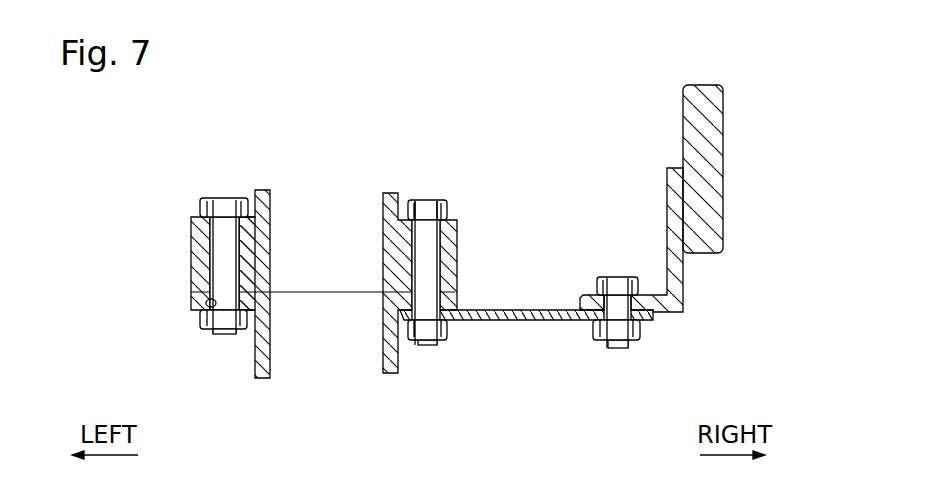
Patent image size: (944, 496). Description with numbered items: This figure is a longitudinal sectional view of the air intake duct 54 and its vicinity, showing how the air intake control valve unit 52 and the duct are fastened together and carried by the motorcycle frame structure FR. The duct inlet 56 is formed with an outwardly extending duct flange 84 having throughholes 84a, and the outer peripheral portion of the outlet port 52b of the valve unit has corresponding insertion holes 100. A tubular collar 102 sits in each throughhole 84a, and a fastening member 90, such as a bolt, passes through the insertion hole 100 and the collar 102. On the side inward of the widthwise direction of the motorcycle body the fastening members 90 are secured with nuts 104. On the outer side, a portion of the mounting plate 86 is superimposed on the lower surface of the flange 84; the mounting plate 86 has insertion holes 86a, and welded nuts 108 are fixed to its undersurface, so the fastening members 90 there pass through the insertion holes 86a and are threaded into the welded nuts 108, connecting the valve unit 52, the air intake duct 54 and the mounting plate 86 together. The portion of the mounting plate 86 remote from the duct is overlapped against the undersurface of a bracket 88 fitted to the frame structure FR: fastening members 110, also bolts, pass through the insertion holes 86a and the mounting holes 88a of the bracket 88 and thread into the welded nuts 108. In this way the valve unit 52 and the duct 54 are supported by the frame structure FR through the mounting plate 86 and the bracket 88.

The air intake control valve unit 52 is at (189, 247).
The outlet port 52b is at (382, 272).
The air intake duct 54 is at (243, 376).
The duct inlet 56 is at (271, 345).
The duct flange 84 is at (195, 297).
The throughholes 84a is at (203, 316).
The mounting plate 86 is at (516, 322).
The insertion holes 86a is at (420, 346).
The bracket 88 is at (675, 273).
The mounting holes 88a is at (613, 292).
The fastening member 90 is at (206, 202).
The insertion holes 100 is at (228, 232).
The tubular collar 102 is at (247, 297).
The nuts 104 is at (207, 331).
The welded nuts 108 is at (443, 336).
The fastening members 110 is at (600, 283).
The motorcycle frame structure FR is at (692, 94).